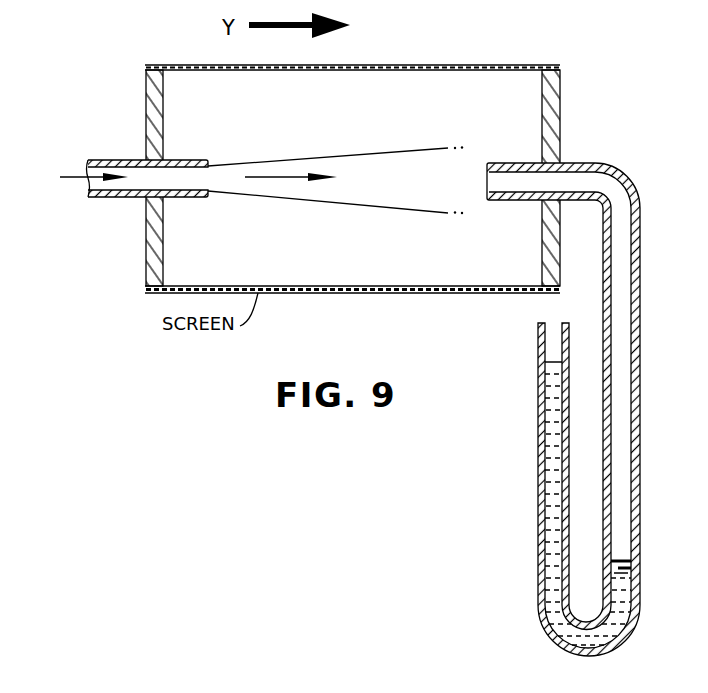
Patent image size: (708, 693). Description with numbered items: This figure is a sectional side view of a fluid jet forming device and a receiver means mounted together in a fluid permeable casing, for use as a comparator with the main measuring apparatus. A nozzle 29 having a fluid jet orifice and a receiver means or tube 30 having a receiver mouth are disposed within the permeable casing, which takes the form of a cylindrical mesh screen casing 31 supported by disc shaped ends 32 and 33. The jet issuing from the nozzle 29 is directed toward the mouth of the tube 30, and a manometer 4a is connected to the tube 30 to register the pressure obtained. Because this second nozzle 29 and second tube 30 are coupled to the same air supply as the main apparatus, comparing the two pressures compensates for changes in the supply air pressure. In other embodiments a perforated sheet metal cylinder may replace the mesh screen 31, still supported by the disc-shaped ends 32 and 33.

The nozzle 29 is at (183, 160).
The receiver tube 30 is at (517, 163).
The mesh screen casing 31 is at (356, 66).
The disc shaped end 32 is at (152, 143).
The disc shaped end 33 is at (552, 103).
The manometer 4a is at (538, 483).